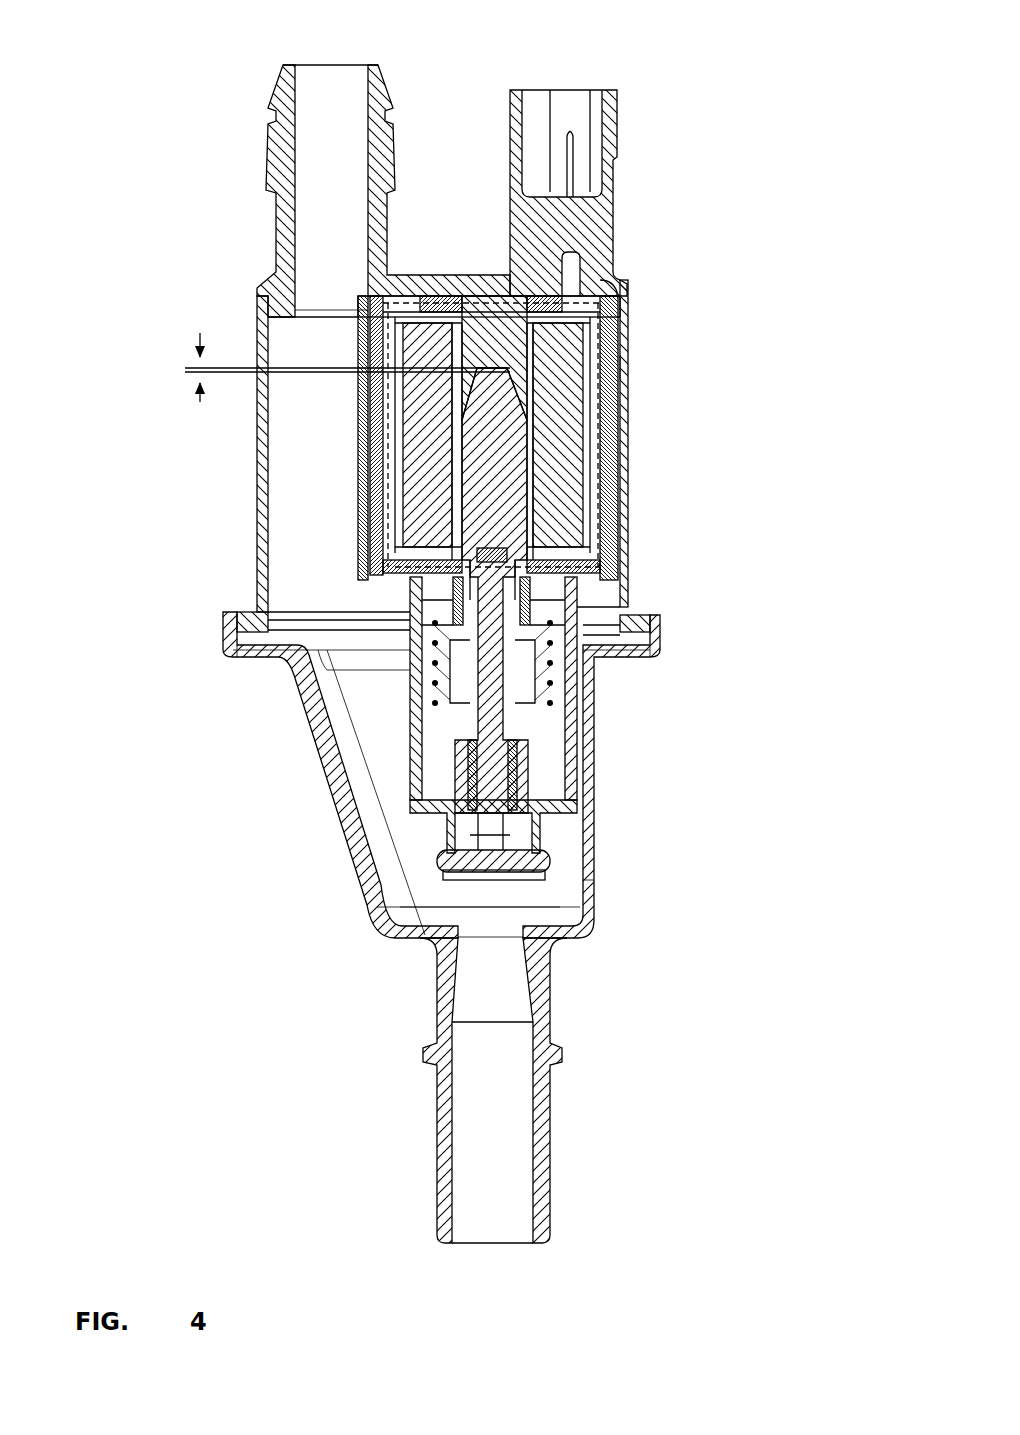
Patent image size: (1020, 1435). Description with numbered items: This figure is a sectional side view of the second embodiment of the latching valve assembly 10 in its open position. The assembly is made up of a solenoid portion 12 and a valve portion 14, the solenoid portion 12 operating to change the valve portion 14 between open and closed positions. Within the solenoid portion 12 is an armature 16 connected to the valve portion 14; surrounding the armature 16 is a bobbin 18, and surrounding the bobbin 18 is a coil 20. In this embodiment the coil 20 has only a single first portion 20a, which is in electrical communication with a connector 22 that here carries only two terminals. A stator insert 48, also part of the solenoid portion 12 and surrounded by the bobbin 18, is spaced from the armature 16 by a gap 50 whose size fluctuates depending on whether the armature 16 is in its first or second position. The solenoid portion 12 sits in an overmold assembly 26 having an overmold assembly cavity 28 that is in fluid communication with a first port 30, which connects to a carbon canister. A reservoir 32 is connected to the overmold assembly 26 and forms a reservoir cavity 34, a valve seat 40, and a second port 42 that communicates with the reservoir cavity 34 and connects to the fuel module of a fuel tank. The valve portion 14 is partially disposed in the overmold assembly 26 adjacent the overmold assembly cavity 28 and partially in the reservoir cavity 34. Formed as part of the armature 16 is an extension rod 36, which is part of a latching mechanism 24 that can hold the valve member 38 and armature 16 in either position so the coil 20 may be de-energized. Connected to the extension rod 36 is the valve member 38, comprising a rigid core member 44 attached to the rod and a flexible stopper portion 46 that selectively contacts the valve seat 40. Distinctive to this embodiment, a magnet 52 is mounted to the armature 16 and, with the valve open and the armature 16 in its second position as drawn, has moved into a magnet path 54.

The latching valve assembly 10 is at (732, 433).
The solenoid portion 12 is at (657, 460).
The valve portion 14 is at (397, 770).
The armature 16 is at (510, 497).
The bobbin 18 is at (445, 437).
The coil 20 is at (573, 400).
The first portion of the coil 20a is at (623, 347).
The connector 22 is at (634, 165).
The latching mechanism 24 is at (583, 715).
The overmold assembly 26 is at (257, 500).
The overmold assembly cavity 28 is at (302, 573).
The first port 30 is at (297, 92).
The reservoir 32 is at (594, 870).
The reservoir cavity 34 is at (383, 856).
The extension rod 36 is at (490, 650).
The valve member 38 is at (562, 840).
The valve seat 40 is at (492, 947).
The second port 42 is at (530, 1217).
The rigid core member 44 is at (532, 878).
The flexible stopper portion 46 is at (425, 895).
The stator insert 48 is at (477, 308).
The gap 50 is at (200, 345).
The magnet 52 is at (515, 556).
The magnet path 54 is at (630, 367).